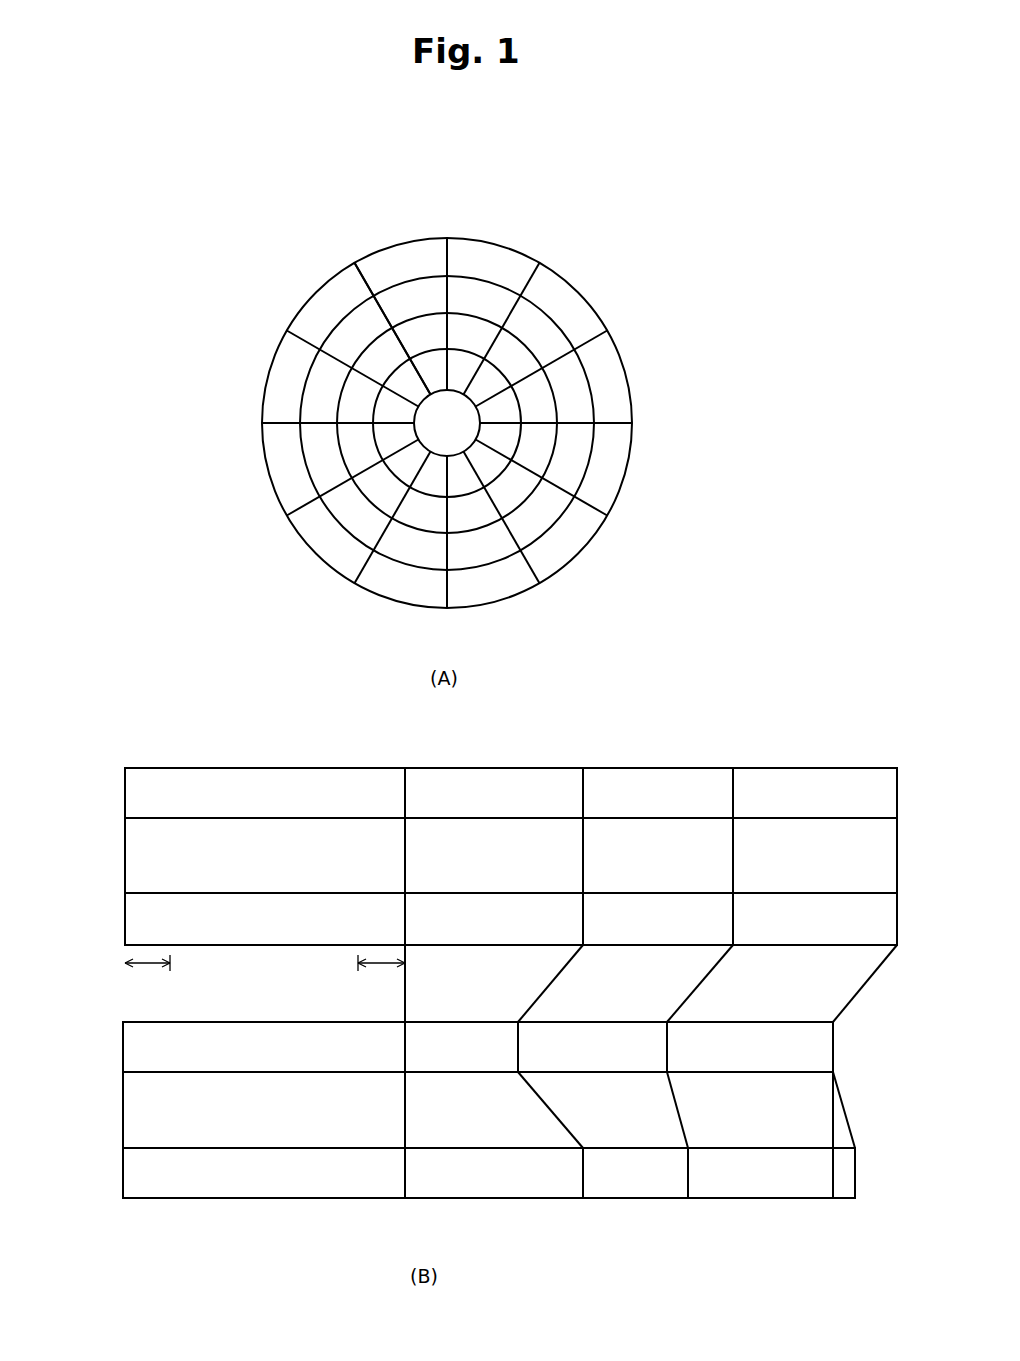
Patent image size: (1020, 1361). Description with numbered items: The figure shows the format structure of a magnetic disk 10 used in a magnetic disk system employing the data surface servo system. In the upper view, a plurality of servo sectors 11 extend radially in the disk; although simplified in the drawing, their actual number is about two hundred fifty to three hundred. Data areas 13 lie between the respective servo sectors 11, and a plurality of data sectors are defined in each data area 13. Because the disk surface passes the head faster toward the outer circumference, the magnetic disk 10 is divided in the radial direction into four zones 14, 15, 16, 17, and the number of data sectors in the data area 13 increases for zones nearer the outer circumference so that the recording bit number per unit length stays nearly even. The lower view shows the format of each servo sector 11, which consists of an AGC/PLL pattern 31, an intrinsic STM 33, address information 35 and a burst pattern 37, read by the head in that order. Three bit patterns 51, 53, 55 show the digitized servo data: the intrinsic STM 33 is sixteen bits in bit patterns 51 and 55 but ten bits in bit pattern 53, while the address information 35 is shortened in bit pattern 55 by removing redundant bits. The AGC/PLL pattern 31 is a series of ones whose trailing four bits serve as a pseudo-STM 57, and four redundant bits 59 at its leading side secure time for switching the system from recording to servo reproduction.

The magnetic disk 10 is at (615, 270).
The servo sector 11 is at (452, 246).
The data area 13 is at (447, 219).
The zone 14 is at (601, 374).
The zone 15 is at (580, 450).
The zone 16 is at (514, 490).
The zone 17 is at (462, 483).
The AGC/PLL pattern 31 is at (260, 768).
The intrinsic servo timing mark 33 is at (488, 768).
The address information 35 is at (648, 768).
The burst pattern 37 is at (808, 768).
The bit pattern 51 is at (125, 915).
The bit pattern 53 is at (123, 1043).
The bit pattern 55 is at (123, 1175).
The pseudo-STM 57 is at (381, 975).
The redundant bits 59 is at (147, 975).